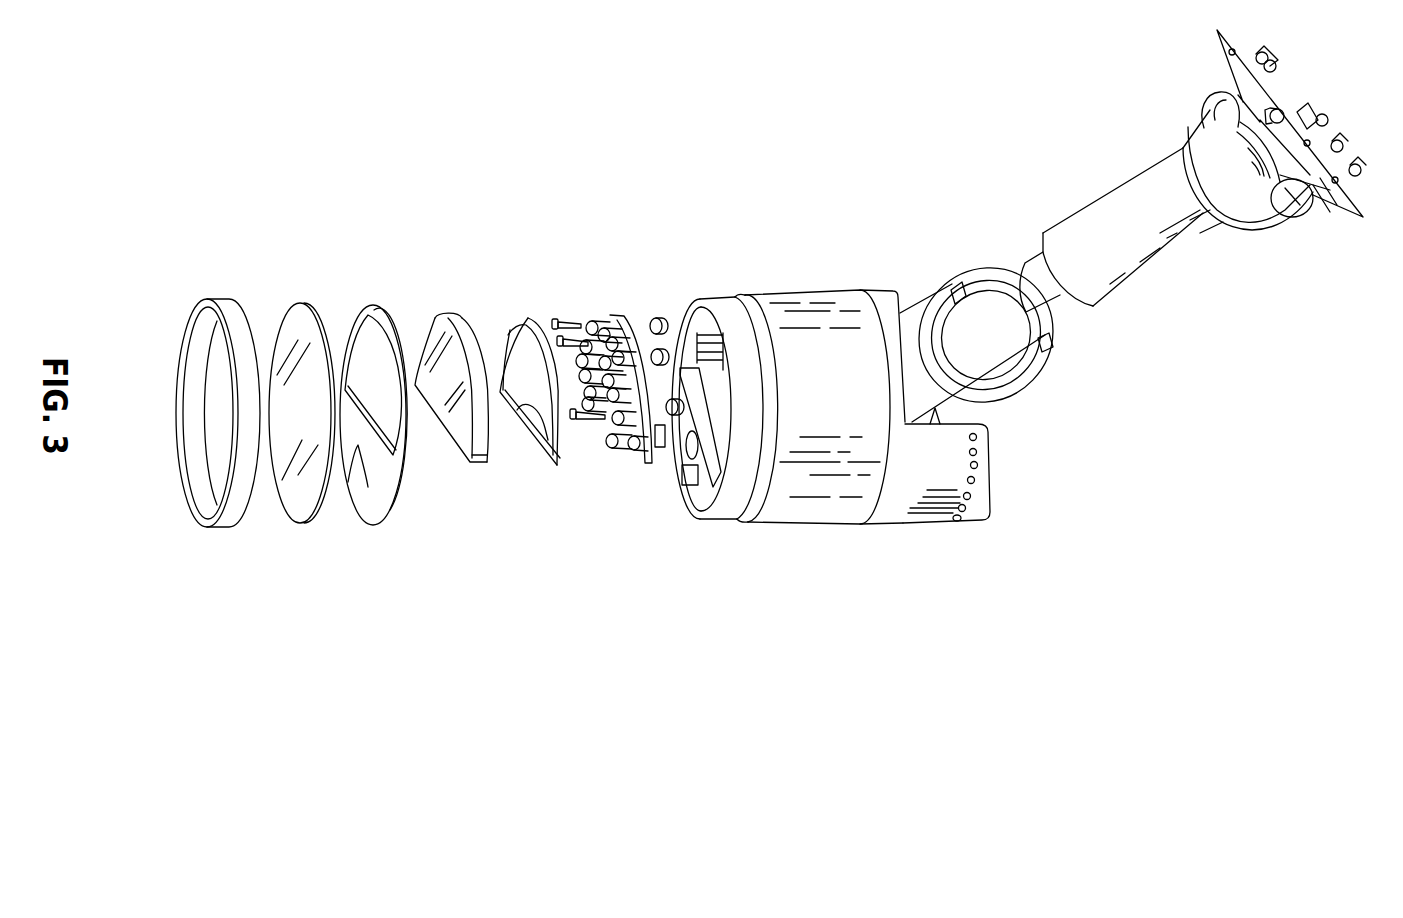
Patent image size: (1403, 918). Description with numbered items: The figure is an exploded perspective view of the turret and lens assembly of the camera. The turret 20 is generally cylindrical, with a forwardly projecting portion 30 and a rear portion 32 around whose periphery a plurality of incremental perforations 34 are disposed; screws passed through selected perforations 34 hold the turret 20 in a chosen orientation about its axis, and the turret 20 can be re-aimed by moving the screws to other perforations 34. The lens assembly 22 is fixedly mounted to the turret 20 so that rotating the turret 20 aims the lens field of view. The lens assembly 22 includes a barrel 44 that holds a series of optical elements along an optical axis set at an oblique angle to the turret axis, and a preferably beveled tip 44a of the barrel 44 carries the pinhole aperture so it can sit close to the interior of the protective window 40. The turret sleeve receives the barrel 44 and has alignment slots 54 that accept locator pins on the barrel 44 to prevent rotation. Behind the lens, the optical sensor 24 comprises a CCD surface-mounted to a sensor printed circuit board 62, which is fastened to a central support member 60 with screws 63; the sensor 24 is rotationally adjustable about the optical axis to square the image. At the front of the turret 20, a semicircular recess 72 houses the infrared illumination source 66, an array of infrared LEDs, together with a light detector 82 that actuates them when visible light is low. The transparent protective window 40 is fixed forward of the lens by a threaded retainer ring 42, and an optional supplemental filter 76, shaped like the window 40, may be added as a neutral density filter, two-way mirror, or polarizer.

The turret 20 is at (808, 282).
The lens assembly 22 is at (1125, 170).
The optical sensor 24 is at (1212, 61).
The forwardly projecting portion 30 is at (807, 498).
The rear portion 32 is at (912, 485).
The incremental perforations 34 is at (975, 520).
The protective window 40 is at (298, 305).
The threaded retainer ring 42 is at (240, 305).
The barrel 44 is at (1113, 277).
The tip 44a is at (983, 270).
The alignment slots 54 is at (955, 283).
The central support member 60 is at (1318, 183).
The sensor printed circuit board 62 is at (1355, 147).
The screws 63 is at (600, 317).
The infrared illumination source 66 is at (624, 305).
The semicircular recess 72 is at (690, 318).
The supplemental filter 76 is at (447, 313).
The light detector 82 is at (612, 437).